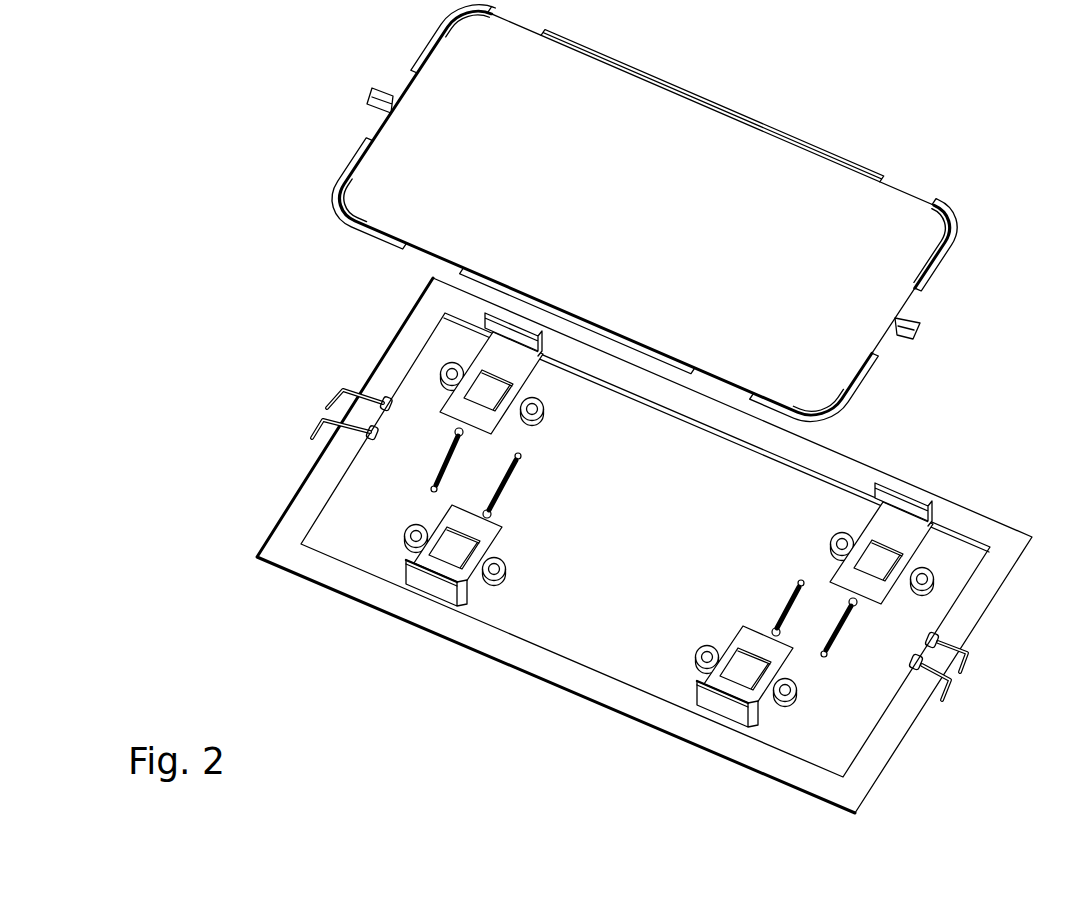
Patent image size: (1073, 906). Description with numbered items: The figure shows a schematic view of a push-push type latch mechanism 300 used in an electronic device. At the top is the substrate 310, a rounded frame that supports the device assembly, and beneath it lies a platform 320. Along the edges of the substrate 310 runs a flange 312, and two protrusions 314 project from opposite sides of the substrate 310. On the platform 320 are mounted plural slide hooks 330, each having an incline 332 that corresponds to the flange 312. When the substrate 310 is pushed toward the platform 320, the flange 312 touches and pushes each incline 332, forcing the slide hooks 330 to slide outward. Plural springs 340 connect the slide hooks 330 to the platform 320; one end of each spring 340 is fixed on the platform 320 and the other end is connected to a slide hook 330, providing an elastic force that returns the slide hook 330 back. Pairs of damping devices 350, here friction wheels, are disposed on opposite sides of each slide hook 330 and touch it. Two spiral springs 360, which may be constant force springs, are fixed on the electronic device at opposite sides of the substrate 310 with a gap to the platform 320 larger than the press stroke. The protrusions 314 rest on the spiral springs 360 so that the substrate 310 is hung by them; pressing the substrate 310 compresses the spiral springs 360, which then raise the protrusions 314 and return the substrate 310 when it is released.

The push-push type latch mechanism 300 is at (290, 94).
The substrate 310 is at (692, 137).
The flange 312 is at (840, 160).
The protrusion 314 is at (915, 326).
The platform 320 is at (350, 567).
The slide hook 330 is at (920, 538).
The incline 332 is at (925, 503).
The spring 340 is at (840, 641).
The damping device 350 is at (803, 700).
The spiral spring 360 is at (962, 678).